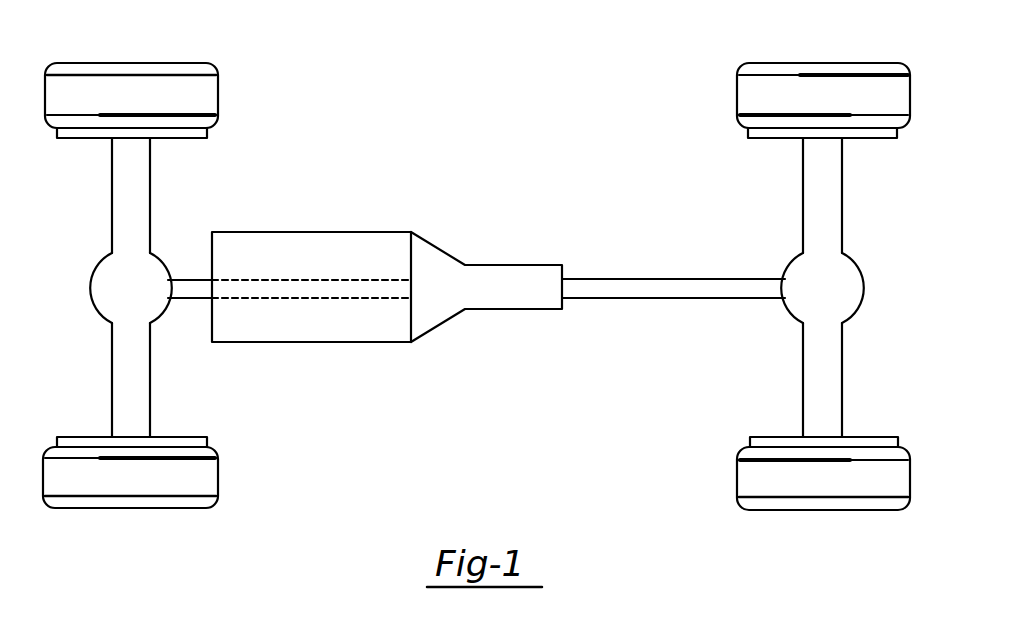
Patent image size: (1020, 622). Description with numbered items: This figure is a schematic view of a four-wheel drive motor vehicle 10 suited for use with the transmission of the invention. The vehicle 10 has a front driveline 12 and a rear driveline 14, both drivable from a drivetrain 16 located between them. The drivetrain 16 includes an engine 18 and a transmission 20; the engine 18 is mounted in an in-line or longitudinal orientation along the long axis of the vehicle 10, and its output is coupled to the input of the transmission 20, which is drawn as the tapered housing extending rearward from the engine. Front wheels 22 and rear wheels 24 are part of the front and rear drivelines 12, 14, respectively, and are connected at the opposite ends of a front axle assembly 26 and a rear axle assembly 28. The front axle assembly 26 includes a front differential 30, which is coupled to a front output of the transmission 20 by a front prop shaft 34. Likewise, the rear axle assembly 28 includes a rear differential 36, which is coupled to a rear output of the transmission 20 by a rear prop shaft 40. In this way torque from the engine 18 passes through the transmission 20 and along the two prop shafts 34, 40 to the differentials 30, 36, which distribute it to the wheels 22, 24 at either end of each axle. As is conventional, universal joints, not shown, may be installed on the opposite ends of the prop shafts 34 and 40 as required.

The vehicle 10 is at (532, 125).
The front driveline 12 is at (168, 202).
The rear driveline 14 is at (728, 233).
The drivetrain 16 is at (398, 215).
The engine 18 is at (350, 322).
The transmission 20 is at (463, 292).
The front wheels 22 is at (203, 93).
The rear wheels 24 is at (765, 100).
The front axle assembly 26 is at (127, 227).
The rear axle assembly 28 is at (832, 235).
The front differential 30 is at (138, 292).
The front prop shaft 34 is at (190, 290).
The rear differential 36 is at (825, 305).
The rear prop shaft 40 is at (653, 290).